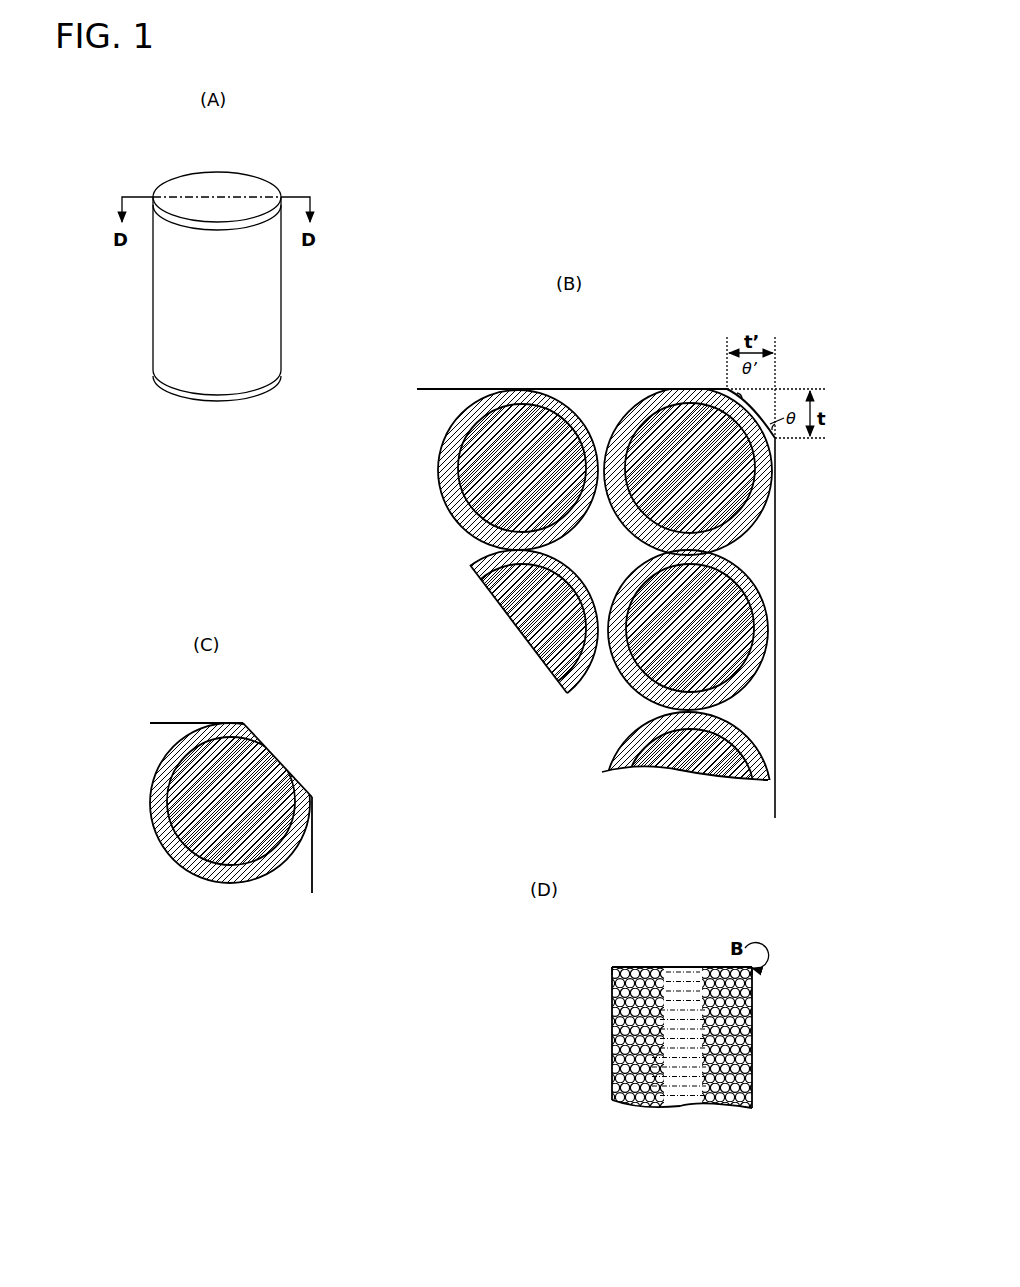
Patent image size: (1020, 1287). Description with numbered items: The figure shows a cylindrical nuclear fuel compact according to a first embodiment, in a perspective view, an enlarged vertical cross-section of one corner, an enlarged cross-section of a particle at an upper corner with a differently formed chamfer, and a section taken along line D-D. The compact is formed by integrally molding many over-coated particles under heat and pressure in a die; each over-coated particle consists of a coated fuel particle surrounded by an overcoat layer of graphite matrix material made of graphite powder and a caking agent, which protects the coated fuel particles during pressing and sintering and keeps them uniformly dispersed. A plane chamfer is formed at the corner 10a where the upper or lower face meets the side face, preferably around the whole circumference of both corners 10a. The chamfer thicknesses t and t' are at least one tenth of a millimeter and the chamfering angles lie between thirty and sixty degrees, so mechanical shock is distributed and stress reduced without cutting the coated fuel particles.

The corner 10a is at (640, 567).